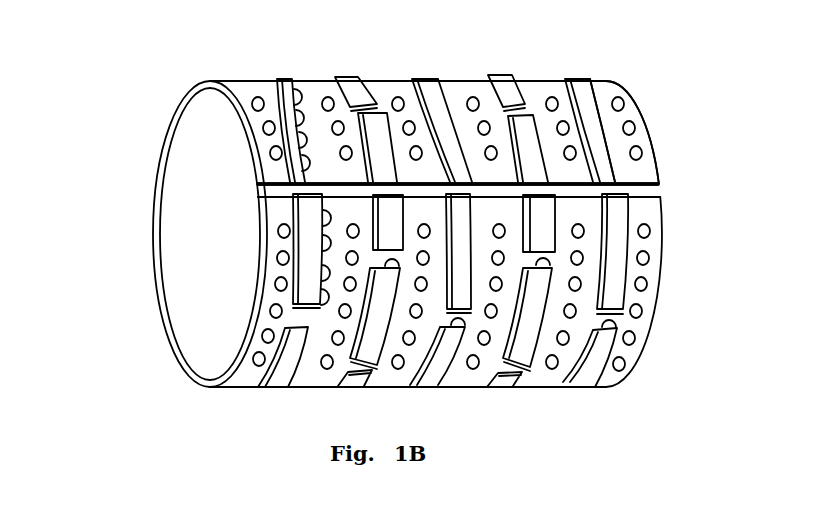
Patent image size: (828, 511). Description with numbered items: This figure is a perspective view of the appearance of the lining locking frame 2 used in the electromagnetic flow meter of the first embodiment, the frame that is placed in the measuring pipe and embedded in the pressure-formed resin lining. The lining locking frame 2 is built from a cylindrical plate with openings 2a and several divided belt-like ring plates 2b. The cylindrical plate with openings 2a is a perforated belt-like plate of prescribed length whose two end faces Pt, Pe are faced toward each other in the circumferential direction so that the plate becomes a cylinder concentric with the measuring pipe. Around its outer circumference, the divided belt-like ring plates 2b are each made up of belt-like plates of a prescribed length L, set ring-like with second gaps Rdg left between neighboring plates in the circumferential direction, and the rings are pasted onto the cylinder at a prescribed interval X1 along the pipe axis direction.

The lining locking frame 2 is at (425, 43).
The cylindrical plate with openings 2a is at (613, 82).
The divided belt-like ring plates 2b is at (570, 79).
The second gap Rdg is at (620, 322).
The end face of belt-like plate with openings Pt is at (258, 184).
The end face of belt-like plate with openings Pe is at (657, 197).
The prescribed length L is at (262, 198).
The prescribed interval X1 is at (330, 77).